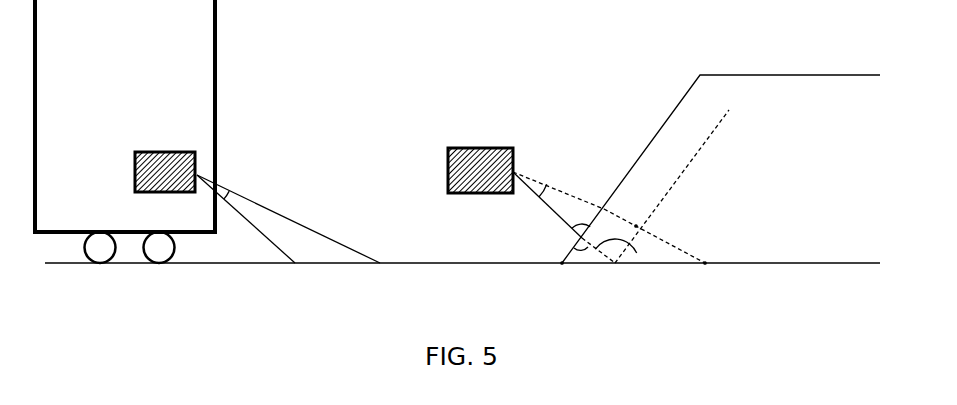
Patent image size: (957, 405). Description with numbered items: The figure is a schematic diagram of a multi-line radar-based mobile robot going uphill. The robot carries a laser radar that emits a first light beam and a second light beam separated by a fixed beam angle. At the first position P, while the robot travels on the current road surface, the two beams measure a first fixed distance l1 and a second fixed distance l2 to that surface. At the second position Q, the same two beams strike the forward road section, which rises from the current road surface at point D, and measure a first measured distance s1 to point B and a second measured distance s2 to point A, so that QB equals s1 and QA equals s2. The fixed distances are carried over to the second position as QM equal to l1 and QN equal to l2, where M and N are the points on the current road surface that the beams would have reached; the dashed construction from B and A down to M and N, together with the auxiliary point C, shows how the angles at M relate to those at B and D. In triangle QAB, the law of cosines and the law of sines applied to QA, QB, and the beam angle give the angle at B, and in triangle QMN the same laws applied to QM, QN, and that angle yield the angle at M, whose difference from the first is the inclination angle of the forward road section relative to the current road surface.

The first position P is at (165, 160).
The second position Q is at (480, 160).
The first fixed distance l1 is at (246, 219).
The second fixed distance l2 is at (288, 219).
The first measured distance s1 is at (547, 205).
The second measured distance s2 is at (558, 190).
The point A is at (654, 228).
The point B is at (588, 247).
The point C is at (646, 229).
The point D is at (556, 273).
The point M is at (662, 198).
The point N is at (700, 274).